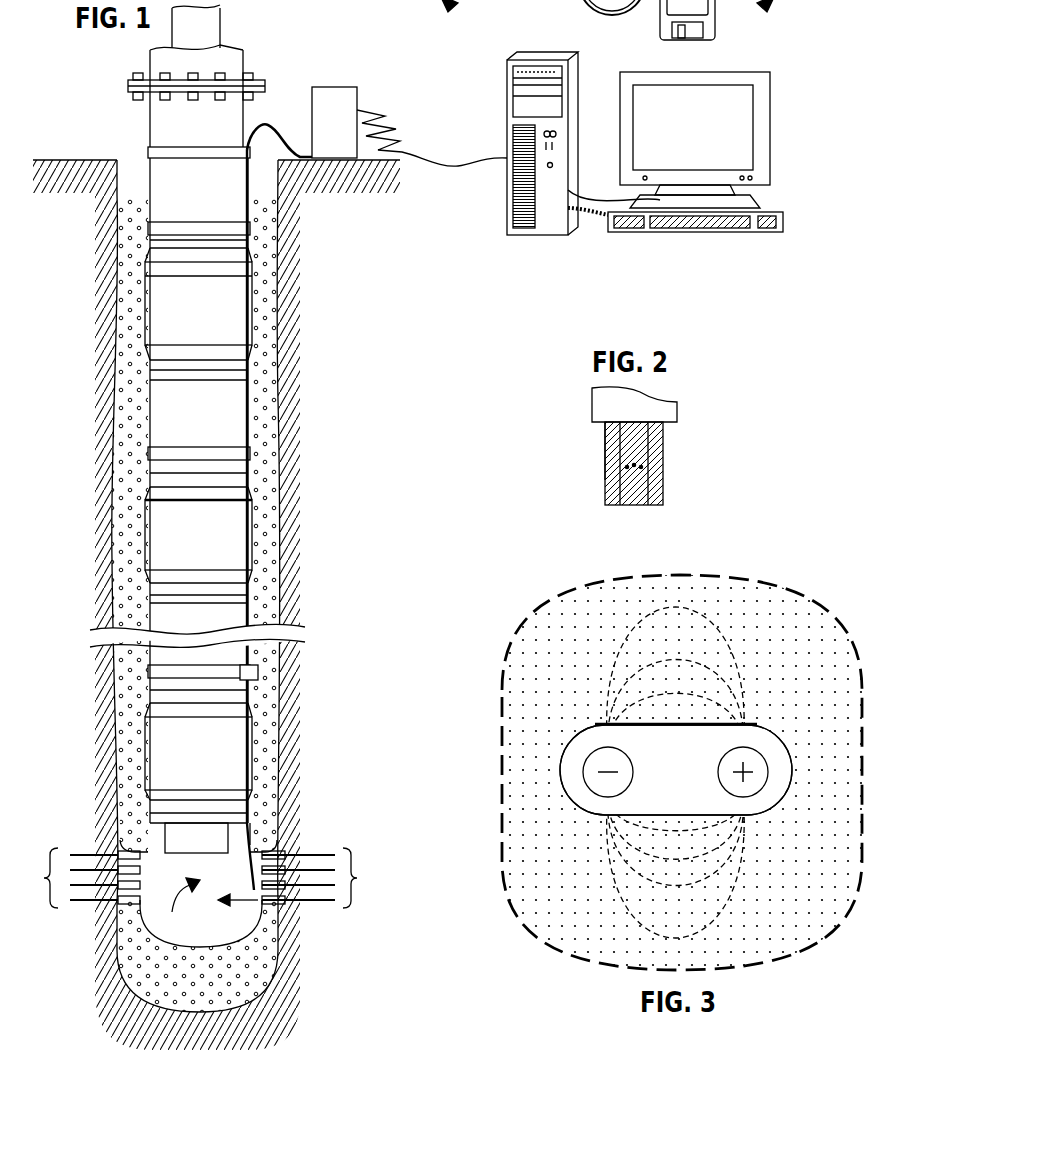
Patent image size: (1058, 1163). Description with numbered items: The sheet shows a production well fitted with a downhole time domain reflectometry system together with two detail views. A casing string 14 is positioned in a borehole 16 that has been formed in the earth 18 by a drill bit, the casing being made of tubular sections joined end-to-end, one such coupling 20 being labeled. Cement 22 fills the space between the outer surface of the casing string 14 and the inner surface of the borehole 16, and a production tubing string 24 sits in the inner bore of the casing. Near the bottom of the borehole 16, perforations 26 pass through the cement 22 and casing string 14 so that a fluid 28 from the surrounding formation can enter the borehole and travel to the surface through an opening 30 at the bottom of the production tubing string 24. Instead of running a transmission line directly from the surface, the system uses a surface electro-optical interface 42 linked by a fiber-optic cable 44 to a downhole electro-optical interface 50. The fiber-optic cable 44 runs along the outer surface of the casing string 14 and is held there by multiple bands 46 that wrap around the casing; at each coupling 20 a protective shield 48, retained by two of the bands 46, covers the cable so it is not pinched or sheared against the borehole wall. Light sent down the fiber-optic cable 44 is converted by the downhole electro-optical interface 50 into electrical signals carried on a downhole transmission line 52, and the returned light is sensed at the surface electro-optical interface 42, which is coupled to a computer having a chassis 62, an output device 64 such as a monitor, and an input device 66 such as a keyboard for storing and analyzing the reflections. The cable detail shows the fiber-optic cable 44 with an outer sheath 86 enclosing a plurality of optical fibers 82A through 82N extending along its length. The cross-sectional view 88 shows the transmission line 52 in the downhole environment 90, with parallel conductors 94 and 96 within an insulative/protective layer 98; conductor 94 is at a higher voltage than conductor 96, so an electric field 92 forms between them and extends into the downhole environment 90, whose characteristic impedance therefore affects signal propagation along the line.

In FIG. 1, the casing string 14 is at (148, 125).
In FIG. 1, the borehole 16 is at (126, 160).
In FIG. 1, the earth 18 is at (216, 605).
In FIG. 1, the coupling 20 is at (230, 325).
In FIG. 1, the cement 22 is at (270, 449).
In FIG. 1, the production tubing string 24 is at (221, 32).
In FIG. 1, the perforations 26 is at (199, 878).
In FIG. 1, the fluid 28 is at (247, 902).
In FIG. 1, the opening 30 is at (180, 912).
In FIG. 1, the surface electro-optical interface 42 is at (357, 97).
In FIG. 1, the fiber-optic cable 44 is at (266, 124).
In FIG. 2, the fiber-optic cable 44 is at (735, 405).
In FIG. 1, the bands 46 is at (180, 147).
In FIG. 1, the protective shield 48 is at (252, 302).
In FIG. 1, the downhole electro-optical interface 50 is at (258, 673).
In FIG. 1, the downhole transmission line 52 is at (252, 836).
In FIG. 3, the downhole transmission line 52 is at (775, 716).
In FIG. 1, the chassis 62 is at (568, 163).
In FIG. 1, the output device 64 is at (748, 190).
In FIG. 1, the input device 66 is at (760, 232).
In FIG. 2, the optical fiber 82A is at (612, 460).
In FIG. 2, the optical fiber 82N is at (655, 450).
In FIG. 2, the outer sheath 86 is at (592, 408).
In FIG. 3, the cross-sectional view 88 is at (822, 585).
In FIG. 3, the downhole environment 90 is at (774, 644).
In FIG. 3, the electric field 92 is at (637, 698).
In FIG. 3, the conductor 94 is at (768, 757).
In FIG. 3, the conductor 96 is at (585, 776).
In FIG. 3, the insulative/protective layer 98 is at (572, 745).